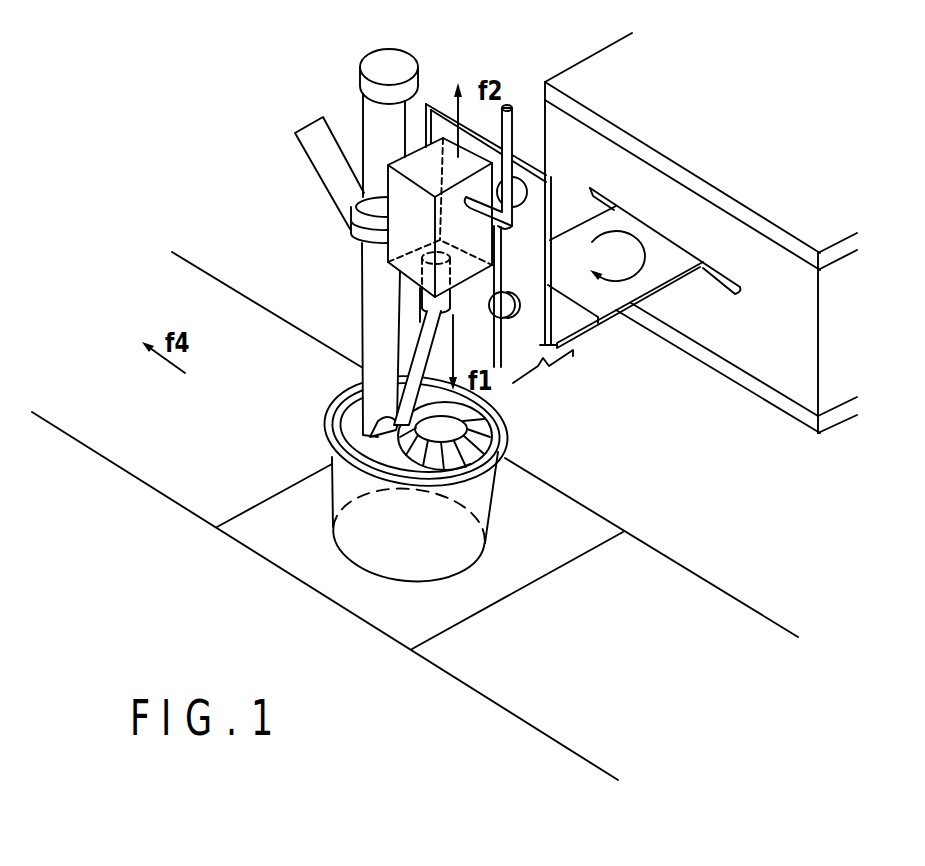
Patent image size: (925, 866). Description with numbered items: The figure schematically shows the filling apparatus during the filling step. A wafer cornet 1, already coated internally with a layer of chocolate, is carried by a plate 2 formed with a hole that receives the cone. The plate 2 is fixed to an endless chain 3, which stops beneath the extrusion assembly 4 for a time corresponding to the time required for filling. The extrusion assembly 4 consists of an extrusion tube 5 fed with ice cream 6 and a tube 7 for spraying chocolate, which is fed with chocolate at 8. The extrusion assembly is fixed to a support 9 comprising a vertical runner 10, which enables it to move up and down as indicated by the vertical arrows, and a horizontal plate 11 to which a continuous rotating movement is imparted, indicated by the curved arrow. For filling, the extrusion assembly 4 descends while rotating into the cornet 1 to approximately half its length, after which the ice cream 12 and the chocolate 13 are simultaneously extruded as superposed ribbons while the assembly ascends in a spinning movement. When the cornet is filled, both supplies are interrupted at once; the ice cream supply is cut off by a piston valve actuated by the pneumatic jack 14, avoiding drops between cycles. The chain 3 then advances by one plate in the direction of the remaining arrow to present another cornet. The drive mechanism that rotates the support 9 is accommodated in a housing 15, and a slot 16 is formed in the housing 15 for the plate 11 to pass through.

The wafer cornet 1 is at (499, 430).
The plate 2 is at (380, 615).
The endless chain 3 is at (213, 523).
The extrusion assembly 4 is at (342, 241).
The extrusion tube 5 is at (377, 345).
The ice cream 6 is at (304, 150).
The tube for spraying chocolate 7 is at (467, 407).
The chocolate feed 8 is at (510, 107).
The support 9 is at (496, 240).
The vertical runner 10 is at (440, 120).
The horizontal plate 11 is at (612, 320).
The ice cream 12 is at (332, 450).
The chocolate 13 is at (476, 456).
The pneumatic jack 14 is at (373, 160).
The housing 15 is at (630, 77).
The slot 16 is at (703, 266).